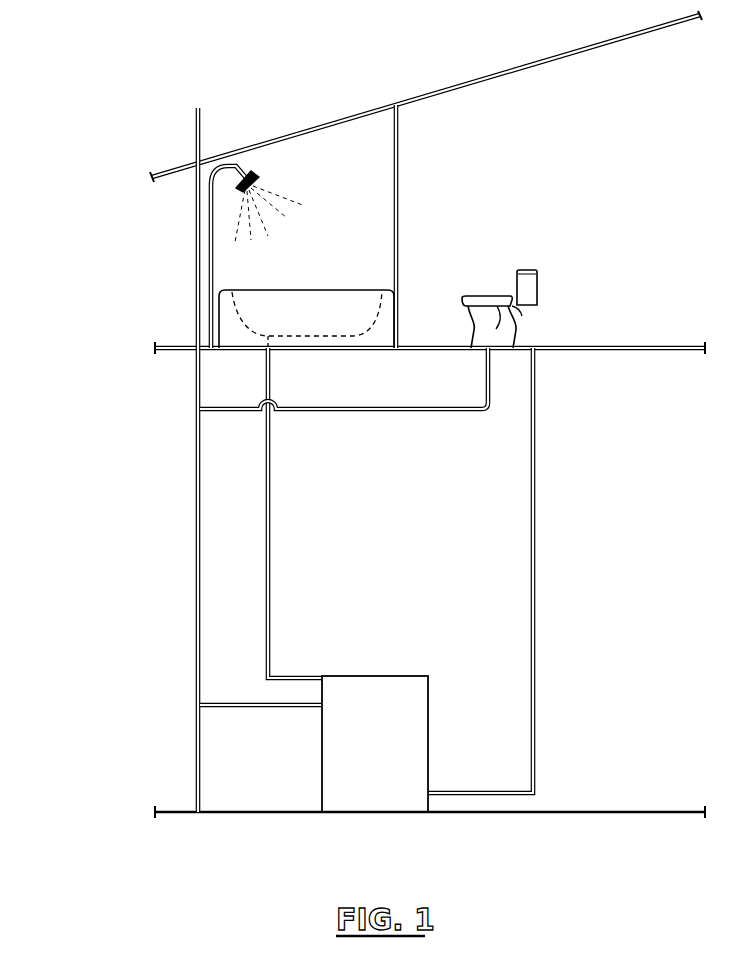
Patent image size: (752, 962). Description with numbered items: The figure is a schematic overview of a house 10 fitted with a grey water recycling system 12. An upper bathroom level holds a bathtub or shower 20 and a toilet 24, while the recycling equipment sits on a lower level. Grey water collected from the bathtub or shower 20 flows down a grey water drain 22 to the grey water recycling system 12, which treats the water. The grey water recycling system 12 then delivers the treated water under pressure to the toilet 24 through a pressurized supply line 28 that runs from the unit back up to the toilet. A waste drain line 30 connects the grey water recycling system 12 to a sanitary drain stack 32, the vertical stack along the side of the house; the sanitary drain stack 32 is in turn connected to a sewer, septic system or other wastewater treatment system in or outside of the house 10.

The house 10 is at (80, 548).
The grey water recycling system 12 is at (296, 755).
The bathtub or shower 20 is at (354, 240).
The grey water drain 22 is at (270, 534).
The toilet 24 is at (538, 283).
The pressurized supply line 28 is at (535, 528).
The waste drain line 30 is at (268, 708).
The sanitary drain stack 32 is at (196, 598).